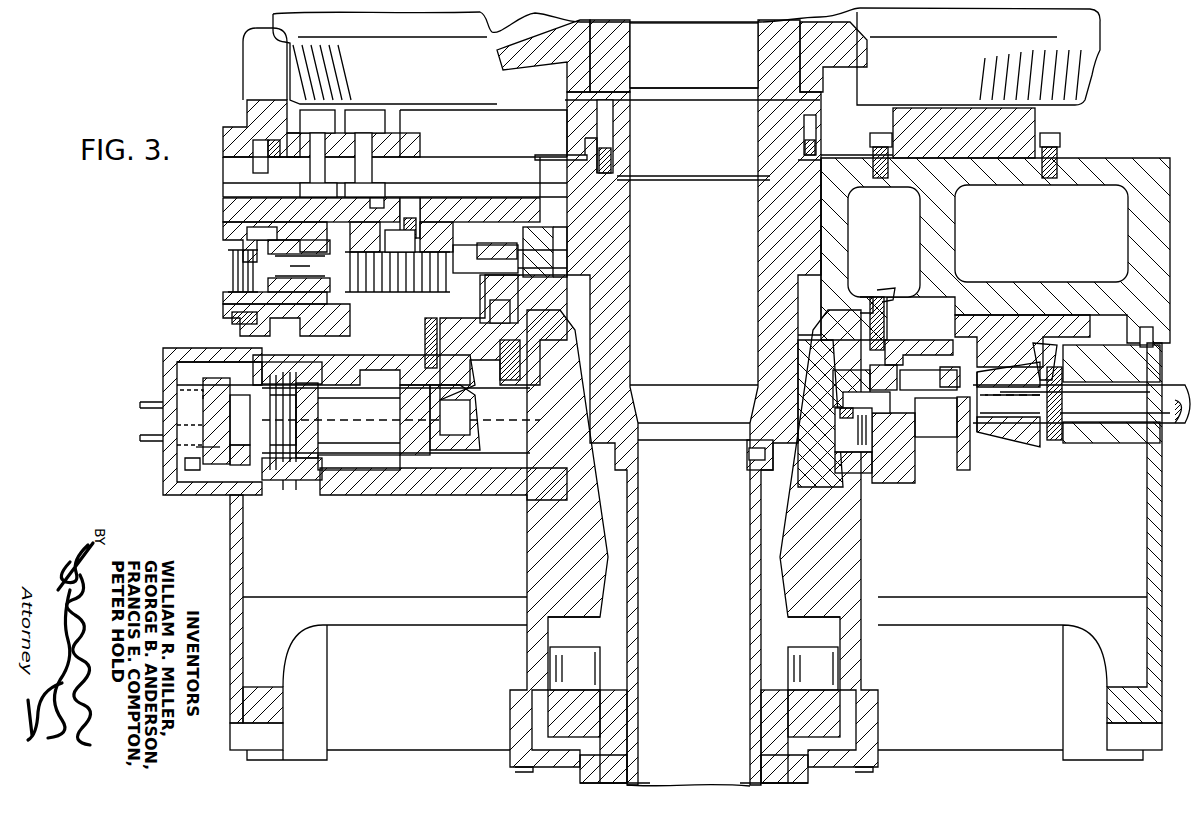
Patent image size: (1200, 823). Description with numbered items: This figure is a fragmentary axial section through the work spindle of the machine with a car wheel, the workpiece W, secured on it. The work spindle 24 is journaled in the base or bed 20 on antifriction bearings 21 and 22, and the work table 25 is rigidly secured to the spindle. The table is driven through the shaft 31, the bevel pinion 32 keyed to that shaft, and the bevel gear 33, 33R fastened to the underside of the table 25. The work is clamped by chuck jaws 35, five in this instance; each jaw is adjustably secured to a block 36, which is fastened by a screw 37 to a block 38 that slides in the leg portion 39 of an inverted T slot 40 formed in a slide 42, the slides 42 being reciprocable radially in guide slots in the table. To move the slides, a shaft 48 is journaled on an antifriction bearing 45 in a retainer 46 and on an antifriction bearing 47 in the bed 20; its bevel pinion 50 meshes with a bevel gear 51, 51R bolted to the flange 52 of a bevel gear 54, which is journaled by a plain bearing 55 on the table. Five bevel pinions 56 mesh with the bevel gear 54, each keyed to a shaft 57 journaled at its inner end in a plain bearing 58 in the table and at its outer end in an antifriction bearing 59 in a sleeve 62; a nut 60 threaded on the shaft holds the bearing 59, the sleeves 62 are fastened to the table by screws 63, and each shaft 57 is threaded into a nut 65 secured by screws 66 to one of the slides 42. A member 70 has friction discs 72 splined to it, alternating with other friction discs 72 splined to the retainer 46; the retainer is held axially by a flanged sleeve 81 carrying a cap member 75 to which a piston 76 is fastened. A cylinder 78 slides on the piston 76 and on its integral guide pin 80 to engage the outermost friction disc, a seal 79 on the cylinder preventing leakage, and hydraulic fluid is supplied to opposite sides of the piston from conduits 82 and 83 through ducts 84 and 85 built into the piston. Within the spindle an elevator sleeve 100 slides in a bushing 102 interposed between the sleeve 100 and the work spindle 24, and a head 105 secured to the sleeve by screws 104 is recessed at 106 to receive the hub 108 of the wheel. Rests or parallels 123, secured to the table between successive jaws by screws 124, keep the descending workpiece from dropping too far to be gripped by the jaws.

The workpiece W is at (1080, 85).
The base or bed 20 is at (238, 580).
The antifriction bearing 21 is at (870, 450).
The antifriction bearing 22 is at (840, 660).
The work spindle 24 is at (800, 565).
The work table 25 is at (1105, 163).
The shaft 31 is at (1162, 425).
The bevel pinion 32 is at (1020, 440).
The bevel gear 33 is at (365, 384).
The gear housing 33R is at (1003, 330).
The chuck jaw 35 is at (258, 78).
The block 36 is at (353, 153).
The screw 37 is at (272, 178).
The block 38 is at (255, 165).
The leg portion 39 is at (450, 170).
The inverted T slot 40 is at (488, 190).
The slide 42 is at (228, 206).
The antifriction bearing 45 is at (300, 445).
The retainer 46 is at (300, 472).
The anti-friction bearing 47 is at (355, 425).
The shaft 48 is at (359, 462).
The bevel pinion 50 is at (457, 448).
The bevel gear 51 is at (448, 371).
The bearing 51R is at (938, 392).
The flange 52 is at (910, 346).
The bevel gear 54 is at (885, 295).
The plain bearing 55 is at (866, 300).
The bevel pinion 56 is at (490, 288).
The shaft 57 is at (468, 257).
The plain bearing 58 is at (552, 232).
The anti-friction bearing 59 is at (262, 288).
The nut 60 is at (243, 247).
The sleeve 62 is at (238, 299).
The screw 63 is at (232, 318).
The nut 65 is at (405, 290).
The screw 66 is at (410, 200).
The splined member 70 is at (268, 475).
The friction disc 72 is at (287, 480).
The cap member 75 is at (165, 366).
The piston 76 is at (218, 414).
The cylinder 78 is at (205, 462).
The seal 79 is at (192, 468).
The guide pin 80 is at (240, 465).
The flanged sleeve 81 is at (195, 352).
The conduit 82 is at (150, 405).
The conduit 83 is at (150, 438).
The duct 84 is at (205, 392).
The duct 85 is at (168, 458).
The second sleeve 100 is at (770, 345).
The bushing 102 is at (820, 235).
The screw 104 is at (606, 132).
The head 105 is at (812, 132).
The recess 106 is at (800, 60).
The hub 108 is at (597, 70).
The rest or parallel 123 is at (1037, 118).
The screw 124 is at (1062, 150).